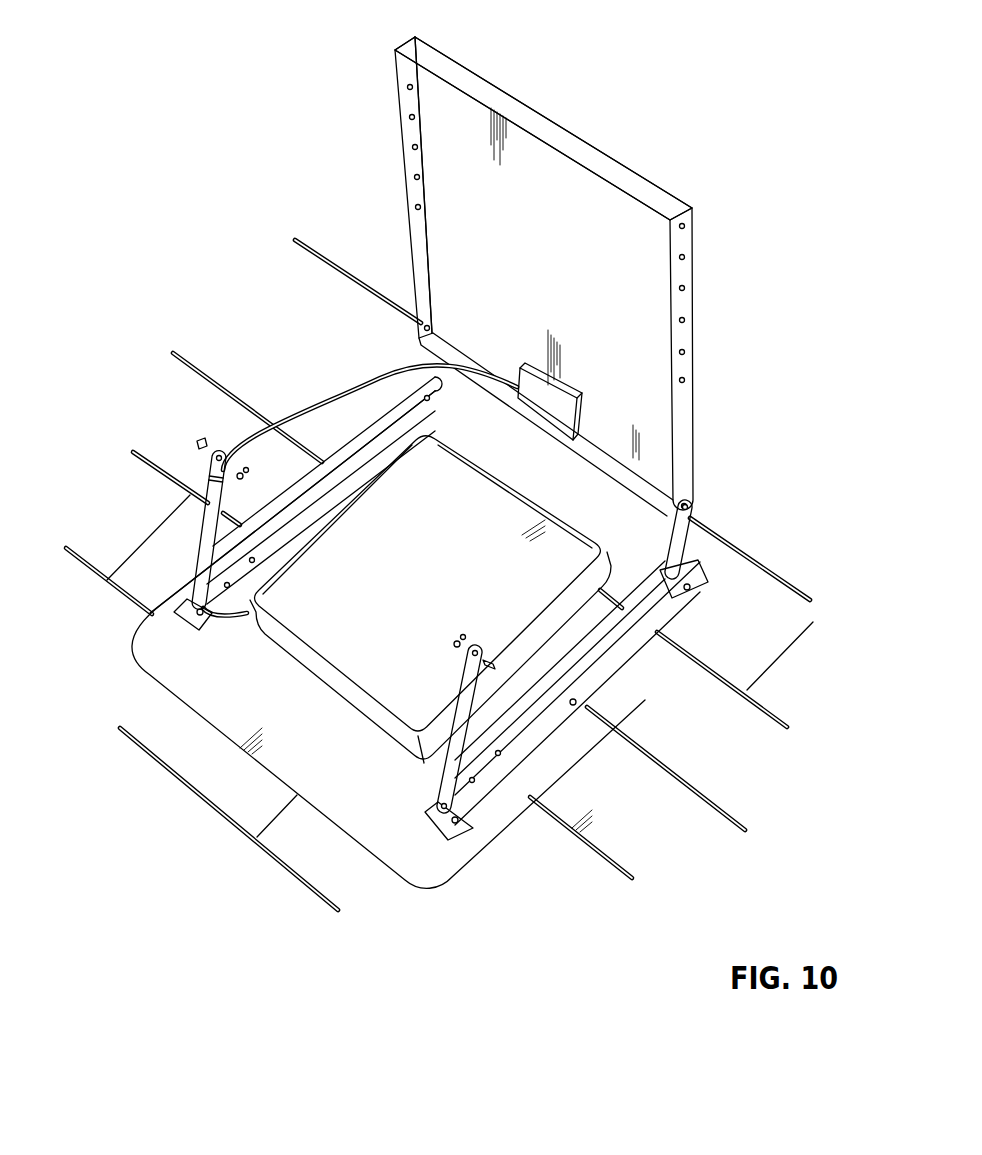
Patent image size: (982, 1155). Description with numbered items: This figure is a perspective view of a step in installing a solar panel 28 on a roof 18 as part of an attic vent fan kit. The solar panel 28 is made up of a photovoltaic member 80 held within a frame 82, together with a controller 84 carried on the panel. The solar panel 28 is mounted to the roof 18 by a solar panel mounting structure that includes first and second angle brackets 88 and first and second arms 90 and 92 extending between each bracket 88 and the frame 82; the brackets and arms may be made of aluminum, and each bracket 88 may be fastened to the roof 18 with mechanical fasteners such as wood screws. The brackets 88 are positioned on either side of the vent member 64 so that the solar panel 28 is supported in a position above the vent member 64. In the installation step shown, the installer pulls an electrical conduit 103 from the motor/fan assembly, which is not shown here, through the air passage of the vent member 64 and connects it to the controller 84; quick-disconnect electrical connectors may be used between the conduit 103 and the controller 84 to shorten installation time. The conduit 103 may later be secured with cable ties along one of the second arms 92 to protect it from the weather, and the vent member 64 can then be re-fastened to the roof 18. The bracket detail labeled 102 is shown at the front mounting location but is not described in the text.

The roof 18 is at (755, 590).
The solar panel 28 is at (622, 173).
The photovoltaic member 80 is at (532, 176).
The frame 82 is at (485, 95).
The controller 84 is at (580, 417).
The electrical conduit 103 is at (330, 395).
The vent member 64 is at (338, 571).
The angle bracket 88 is at (643, 635).
The second arm 92 is at (203, 530).
The first arm 90 is at (683, 527).
The front bracket 102 is at (450, 808).